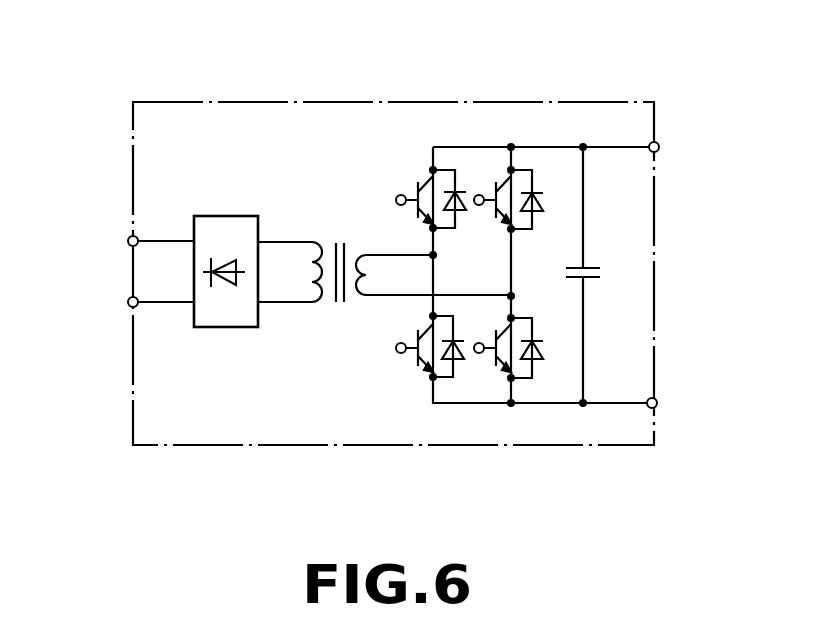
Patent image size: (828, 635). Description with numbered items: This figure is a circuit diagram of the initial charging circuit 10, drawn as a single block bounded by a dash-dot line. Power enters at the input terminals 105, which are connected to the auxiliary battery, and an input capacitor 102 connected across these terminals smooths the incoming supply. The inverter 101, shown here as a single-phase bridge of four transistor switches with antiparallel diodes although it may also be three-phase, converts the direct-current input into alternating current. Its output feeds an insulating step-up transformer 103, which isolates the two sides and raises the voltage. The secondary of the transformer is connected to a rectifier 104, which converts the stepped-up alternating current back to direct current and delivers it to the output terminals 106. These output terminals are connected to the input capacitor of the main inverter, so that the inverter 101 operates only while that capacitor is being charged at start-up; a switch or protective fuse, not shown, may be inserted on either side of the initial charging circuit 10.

The initial charging circuit 10 is at (273, 101).
The inverter 101 is at (465, 180).
The input capacitor 102 is at (596, 276).
The insulating step-up transformer 103 is at (341, 306).
The rectifier 104 is at (222, 328).
The input terminals 105 is at (660, 143).
The output terminals 106 is at (128, 238).